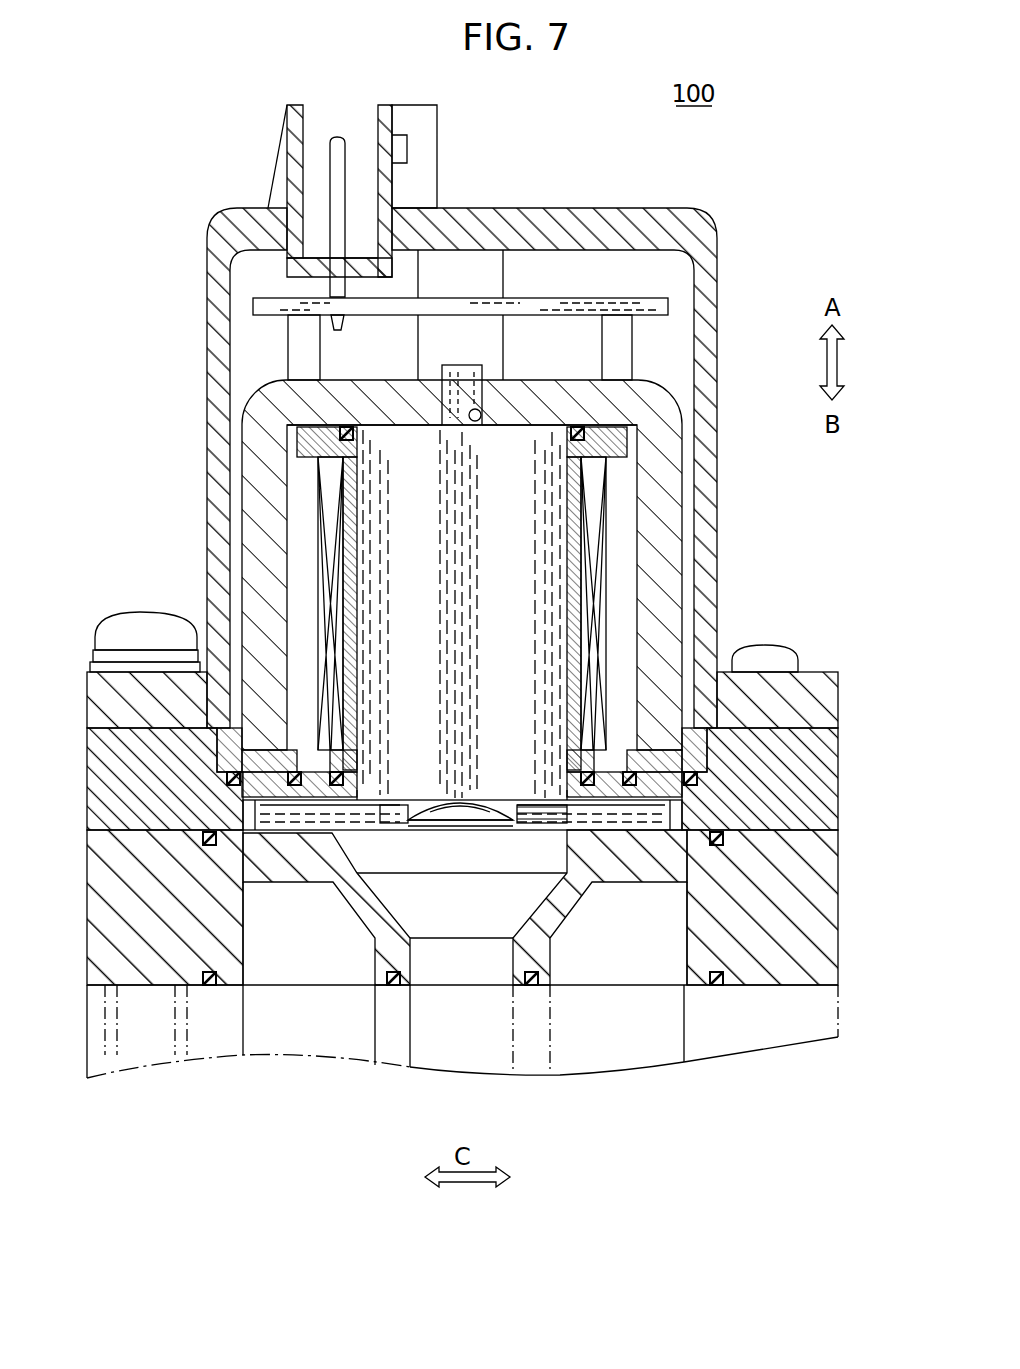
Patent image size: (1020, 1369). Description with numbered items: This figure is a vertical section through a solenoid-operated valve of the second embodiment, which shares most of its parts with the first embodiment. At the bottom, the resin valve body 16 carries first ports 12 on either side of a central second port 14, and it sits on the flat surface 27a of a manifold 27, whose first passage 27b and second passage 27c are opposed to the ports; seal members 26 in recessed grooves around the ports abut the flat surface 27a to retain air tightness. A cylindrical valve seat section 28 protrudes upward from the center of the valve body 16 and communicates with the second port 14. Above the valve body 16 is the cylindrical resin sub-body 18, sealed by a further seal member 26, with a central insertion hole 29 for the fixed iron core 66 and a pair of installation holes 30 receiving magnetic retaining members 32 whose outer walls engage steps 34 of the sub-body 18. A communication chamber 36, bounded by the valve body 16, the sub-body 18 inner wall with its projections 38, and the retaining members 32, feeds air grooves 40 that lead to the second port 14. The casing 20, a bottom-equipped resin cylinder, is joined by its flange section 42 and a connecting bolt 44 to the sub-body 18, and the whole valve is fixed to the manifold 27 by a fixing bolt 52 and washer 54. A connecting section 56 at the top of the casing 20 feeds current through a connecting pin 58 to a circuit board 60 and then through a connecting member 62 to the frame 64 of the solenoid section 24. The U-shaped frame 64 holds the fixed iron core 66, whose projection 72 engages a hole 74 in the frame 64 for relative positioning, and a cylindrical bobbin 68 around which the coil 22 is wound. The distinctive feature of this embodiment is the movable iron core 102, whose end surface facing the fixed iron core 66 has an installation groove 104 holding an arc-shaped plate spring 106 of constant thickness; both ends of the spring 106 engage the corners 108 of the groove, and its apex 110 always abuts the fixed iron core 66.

The first port 12 is at (320, 968).
The second port 14 is at (462, 968).
The valve body 16 is at (822, 866).
The sub-body 18 is at (822, 790).
The casing 20 is at (706, 228).
The coil 22 is at (330, 505).
The solenoid section 24 is at (262, 408).
The seal member 26 is at (578, 428).
The manifold 27 is at (770, 1045).
The flat surface 27a is at (830, 968).
The first passage 27b is at (252, 1052).
The second passage 27c is at (412, 1050).
The valve seat section 28 is at (576, 838).
The insertion hole 29 is at (396, 792).
The installation hole 30 is at (638, 786).
The retaining member 32 is at (280, 722).
The step 34 is at (720, 745).
The communication chamber 36 is at (399, 798).
The projection 38 is at (250, 812).
The air groove 40 is at (342, 888).
The flange section 42 is at (800, 680).
The connecting bolt 44 is at (765, 655).
The fixing bolt 52 is at (143, 626).
The washer 54 is at (97, 665).
The connecting section 56 is at (426, 138).
The connecting pin 58 is at (337, 136).
The circuit board 60 is at (536, 302).
The connecting member 62 is at (316, 355).
The frame 64 is at (667, 448).
The fixed iron core 66 is at (520, 556).
The bobbin 68 is at (356, 520).
The projection 72 is at (458, 370).
The hole 74 is at (475, 422).
The movable iron core 102 is at (421, 822).
The installation groove 104 is at (494, 824).
The spring 106 is at (494, 798).
The corner 108 is at (510, 832).
The apex 110 is at (458, 802).